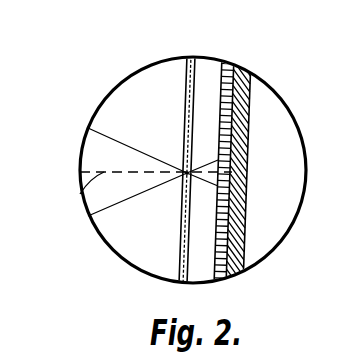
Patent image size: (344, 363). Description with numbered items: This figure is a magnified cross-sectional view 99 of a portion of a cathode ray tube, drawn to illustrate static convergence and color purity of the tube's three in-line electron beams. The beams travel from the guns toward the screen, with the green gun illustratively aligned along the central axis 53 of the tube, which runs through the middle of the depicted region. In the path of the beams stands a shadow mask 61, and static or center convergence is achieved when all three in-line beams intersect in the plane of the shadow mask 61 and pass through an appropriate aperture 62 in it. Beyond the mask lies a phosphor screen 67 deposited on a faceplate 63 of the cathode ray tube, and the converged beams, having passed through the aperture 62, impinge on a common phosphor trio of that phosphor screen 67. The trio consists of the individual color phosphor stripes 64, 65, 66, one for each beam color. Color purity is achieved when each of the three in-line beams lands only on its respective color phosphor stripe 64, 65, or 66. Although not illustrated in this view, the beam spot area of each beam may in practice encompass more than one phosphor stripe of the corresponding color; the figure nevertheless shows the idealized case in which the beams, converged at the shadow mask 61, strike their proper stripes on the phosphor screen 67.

The central axis 53 is at (78, 195).
The shadow mask 61 is at (183, 82).
The aperture 62 is at (191, 169).
The faceplate 63 is at (252, 116).
The color phosphor stripe 64 is at (236, 163).
The color phosphor stripe 65 is at (247, 173).
The color phosphor stripe 66 is at (248, 187).
The phosphor screen 67 is at (218, 77).
The magnified cross-sectional view 99 is at (92, 122).